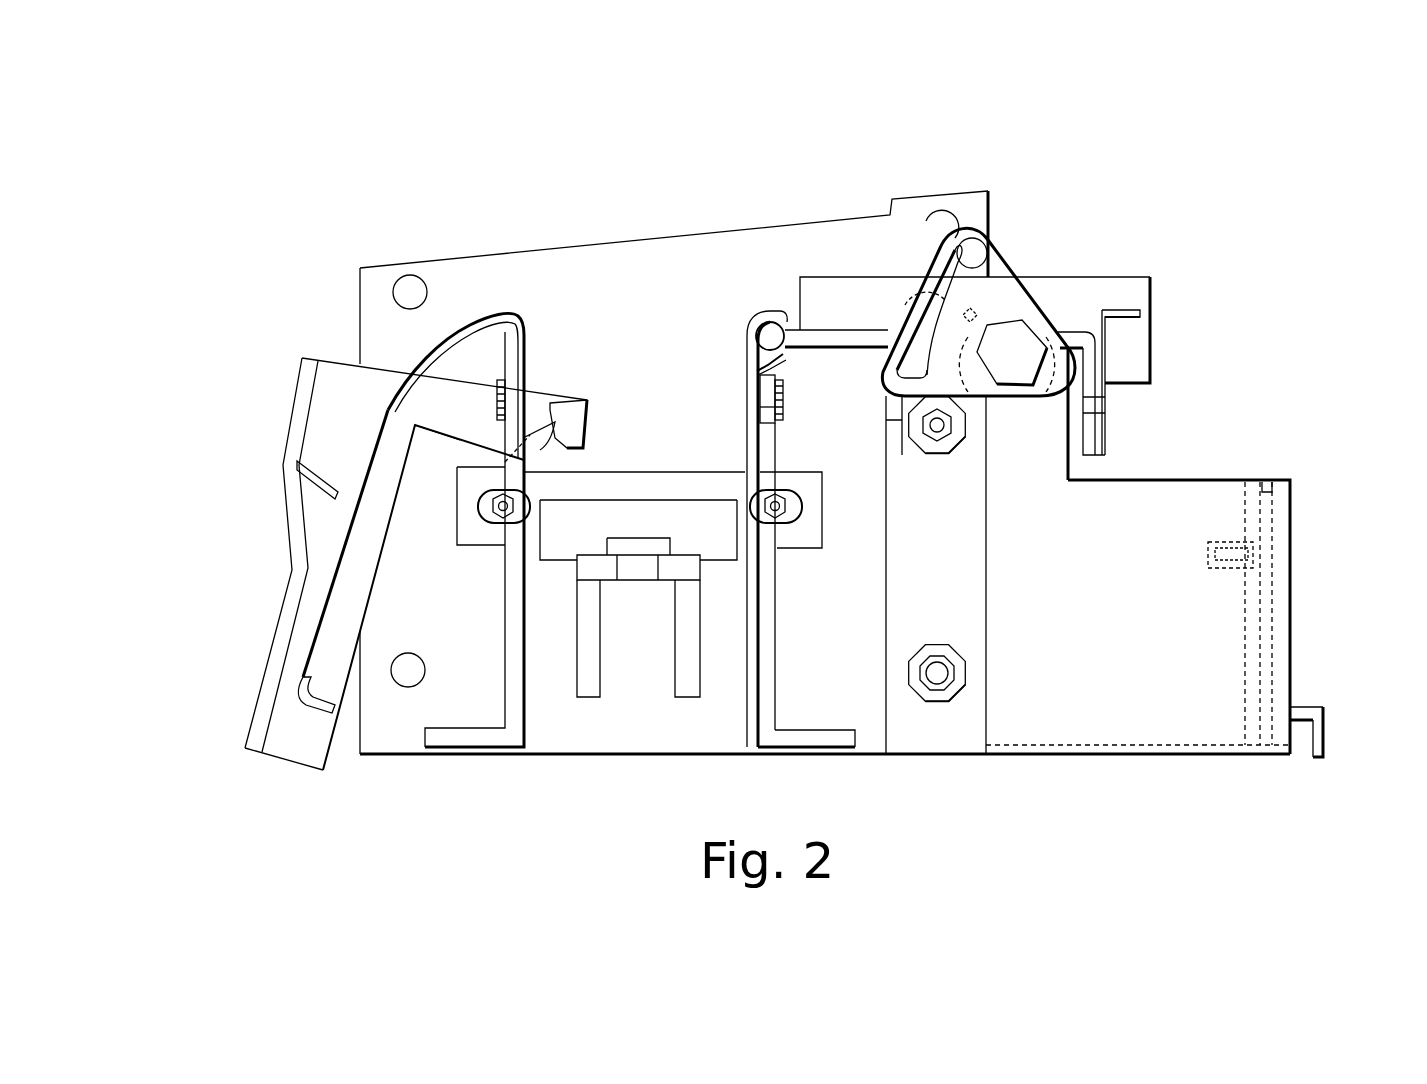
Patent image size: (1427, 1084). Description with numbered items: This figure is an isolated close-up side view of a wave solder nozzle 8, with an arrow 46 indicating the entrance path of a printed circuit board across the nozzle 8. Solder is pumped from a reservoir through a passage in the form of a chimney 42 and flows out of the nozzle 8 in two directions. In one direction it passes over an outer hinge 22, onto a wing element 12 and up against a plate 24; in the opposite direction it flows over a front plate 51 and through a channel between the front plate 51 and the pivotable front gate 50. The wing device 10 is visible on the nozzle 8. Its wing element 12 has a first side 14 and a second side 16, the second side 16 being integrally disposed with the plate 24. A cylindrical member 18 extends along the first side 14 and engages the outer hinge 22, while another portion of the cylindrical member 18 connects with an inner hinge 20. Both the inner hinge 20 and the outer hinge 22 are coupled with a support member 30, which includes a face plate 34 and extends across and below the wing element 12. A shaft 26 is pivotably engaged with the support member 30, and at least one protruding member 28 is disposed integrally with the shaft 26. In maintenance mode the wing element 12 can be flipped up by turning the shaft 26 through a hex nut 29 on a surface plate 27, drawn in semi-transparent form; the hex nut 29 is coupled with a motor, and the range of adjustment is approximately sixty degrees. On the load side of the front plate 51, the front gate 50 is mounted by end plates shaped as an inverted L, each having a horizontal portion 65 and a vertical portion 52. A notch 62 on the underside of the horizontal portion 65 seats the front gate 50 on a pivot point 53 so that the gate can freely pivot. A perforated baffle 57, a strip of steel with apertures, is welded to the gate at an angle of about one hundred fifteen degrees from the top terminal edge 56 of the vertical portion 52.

The nozzle 8 is at (551, 112).
The wing device 10 is at (903, 240).
The wing element 12 is at (811, 330).
The first side 14 is at (868, 350).
The second side 16 is at (1090, 455).
The cylindrical member 18 is at (757, 312).
The inner hinge 20 is at (783, 362).
The outer hinge 22 is at (745, 350).
The plate 24 is at (1118, 308).
The shaft 26 is at (1040, 378).
The surface plate 27 is at (1000, 265).
The protruding member 28 is at (966, 365).
The hex nut 29 is at (1013, 318).
The support member 30 is at (1147, 606).
The face plate 34 is at (1322, 727).
The chimney 42 is at (625, 383).
The arrow 46 is at (212, 276).
The front gate 50 is at (380, 378).
The front plate 51 is at (488, 312).
The vertical portion 52 is at (292, 405).
The pivot point 53 is at (537, 452).
The top terminal edge 56 is at (300, 358).
The perforated baffle 57 is at (320, 468).
The notch 62 is at (545, 398).
The horizontal portion 65 is at (454, 390).